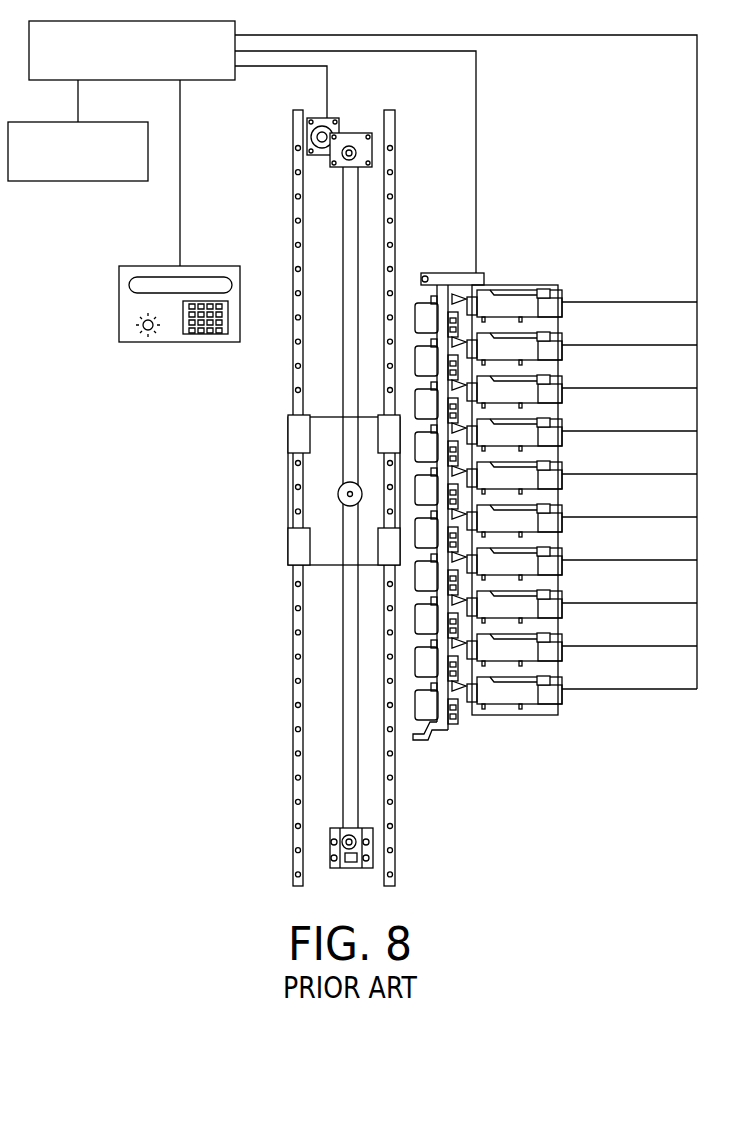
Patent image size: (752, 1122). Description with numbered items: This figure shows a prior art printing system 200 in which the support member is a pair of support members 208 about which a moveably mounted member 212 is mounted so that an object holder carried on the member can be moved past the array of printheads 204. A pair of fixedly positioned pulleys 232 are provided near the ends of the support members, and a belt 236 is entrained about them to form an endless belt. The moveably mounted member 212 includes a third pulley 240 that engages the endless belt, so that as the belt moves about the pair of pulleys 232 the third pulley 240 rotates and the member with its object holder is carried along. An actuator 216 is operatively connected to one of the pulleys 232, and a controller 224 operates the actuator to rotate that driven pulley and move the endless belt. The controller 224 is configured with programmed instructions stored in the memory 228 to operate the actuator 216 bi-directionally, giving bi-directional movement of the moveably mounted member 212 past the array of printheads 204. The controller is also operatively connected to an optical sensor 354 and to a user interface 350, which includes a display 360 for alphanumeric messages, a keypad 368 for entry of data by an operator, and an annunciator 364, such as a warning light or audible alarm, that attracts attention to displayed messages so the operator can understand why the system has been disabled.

The alternative embodiment of the printing system 200 is at (548, 158).
The array of printheads 204 is at (550, 270).
The pair of support members 208 is at (296, 842).
The moveably mounted member 212 is at (312, 490).
The actuator 216 is at (331, 118).
The controller 224 is at (206, 81).
The memory 228 is at (68, 182).
The pair of fixedly positioned pulleys 232 is at (355, 168).
The belt 236 is at (360, 214).
The third pulley 240 is at (338, 494).
The user interface 350 is at (176, 314).
The optical sensor 354 is at (484, 273).
The display 360 is at (150, 277).
The annunciator 364 is at (142, 322).
The keypad 368 is at (215, 334).